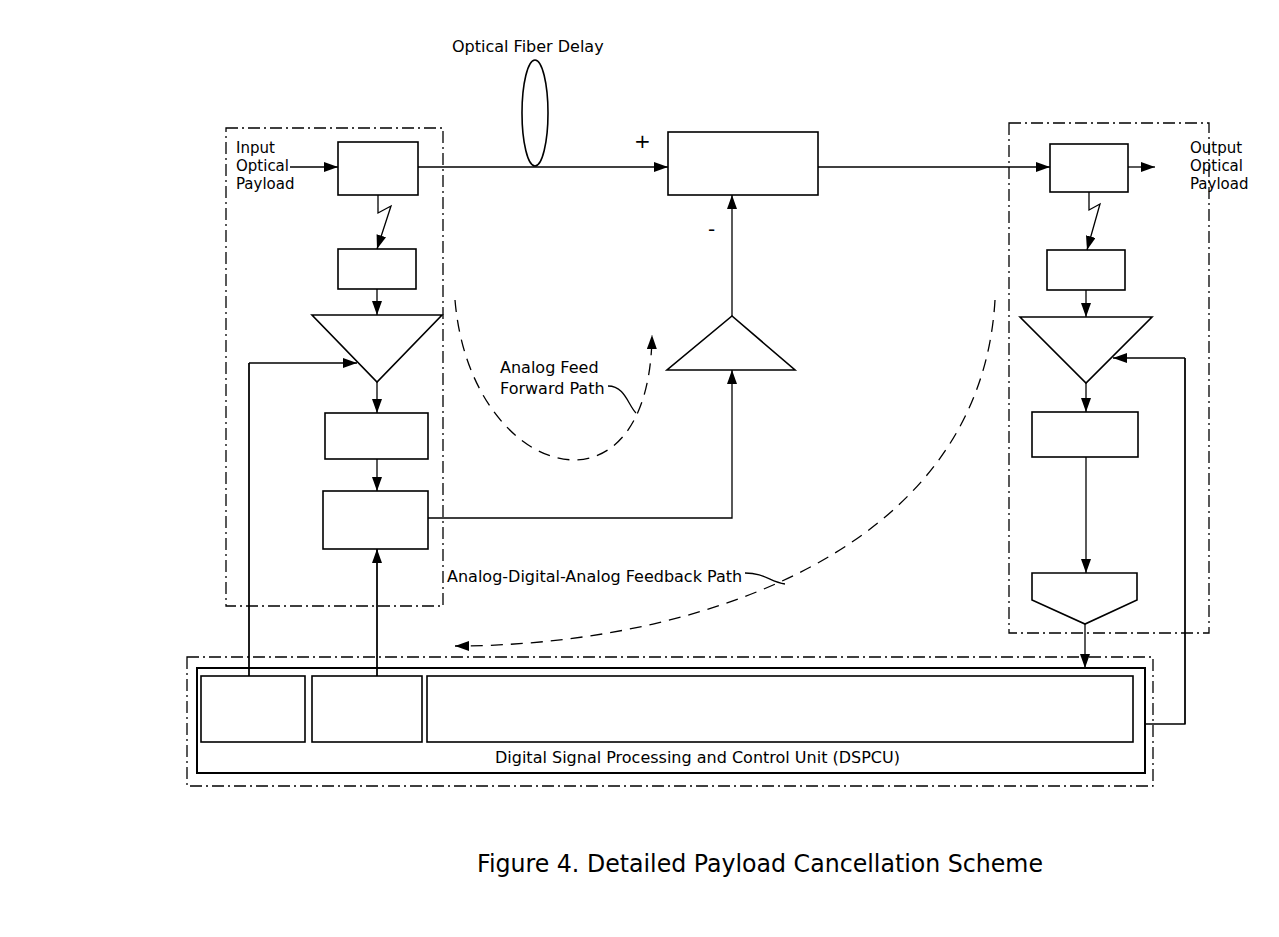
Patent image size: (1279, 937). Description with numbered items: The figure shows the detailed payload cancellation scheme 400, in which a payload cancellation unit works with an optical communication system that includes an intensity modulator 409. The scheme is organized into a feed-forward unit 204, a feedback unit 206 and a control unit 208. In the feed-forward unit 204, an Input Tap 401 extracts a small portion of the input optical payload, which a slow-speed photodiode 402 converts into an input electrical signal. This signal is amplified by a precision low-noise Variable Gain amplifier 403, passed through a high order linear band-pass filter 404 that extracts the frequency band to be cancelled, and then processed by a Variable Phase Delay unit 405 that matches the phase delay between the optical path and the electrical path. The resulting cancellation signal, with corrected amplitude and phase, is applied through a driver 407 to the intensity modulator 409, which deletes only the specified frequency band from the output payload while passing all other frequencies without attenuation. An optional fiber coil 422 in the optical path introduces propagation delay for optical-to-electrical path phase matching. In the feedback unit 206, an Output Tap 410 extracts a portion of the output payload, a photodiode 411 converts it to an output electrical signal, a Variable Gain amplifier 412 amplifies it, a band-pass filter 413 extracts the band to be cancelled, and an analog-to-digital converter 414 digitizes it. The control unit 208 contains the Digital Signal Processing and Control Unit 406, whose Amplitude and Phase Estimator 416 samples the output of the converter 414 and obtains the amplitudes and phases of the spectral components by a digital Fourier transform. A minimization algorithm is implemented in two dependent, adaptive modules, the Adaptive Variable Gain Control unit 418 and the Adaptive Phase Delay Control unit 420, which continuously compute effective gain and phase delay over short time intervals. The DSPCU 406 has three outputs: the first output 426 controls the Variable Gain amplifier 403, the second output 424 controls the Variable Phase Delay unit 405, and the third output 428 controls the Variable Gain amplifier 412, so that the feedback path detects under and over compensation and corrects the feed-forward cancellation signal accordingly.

The payload cancellation scheme 400 is at (1068, 90).
The feedback unit 206 is at (248, 128).
The feed-forward unit 204 is at (1040, 123).
The control unit 208 is at (1153, 768).
The Input Tap 401 is at (395, 142).
The photodiode 402 is at (416, 265).
The Variable Gain amplifier 403 is at (328, 331).
The band-pass filter 404 is at (325, 436).
The Variable Phase Delay unit 405 is at (323, 522).
The fiber coil 422 is at (548, 113).
The Intensity Modulator 409 is at (727, 132).
The driver 407 is at (762, 338).
The Output Tap 410 is at (1073, 144).
The photodiode 411 is at (1125, 270).
The Variable Gain amplifier 412 is at (1136, 317).
The band-pass filter 413 is at (1138, 430).
The Analog to Digital Converter 414 is at (1137, 590).
The third output 428 is at (1186, 657).
The Digital Signal Processing and Control Unit 406 is at (1145, 688).
The Amplitude and Phase Estimator 416 is at (790, 677).
The Adaptive Variable Gain Control unit 418 is at (226, 742).
The Adaptive Phase Delay Control unit 420 is at (348, 742).
The first output 426 is at (249, 634).
The second output 424 is at (378, 632).